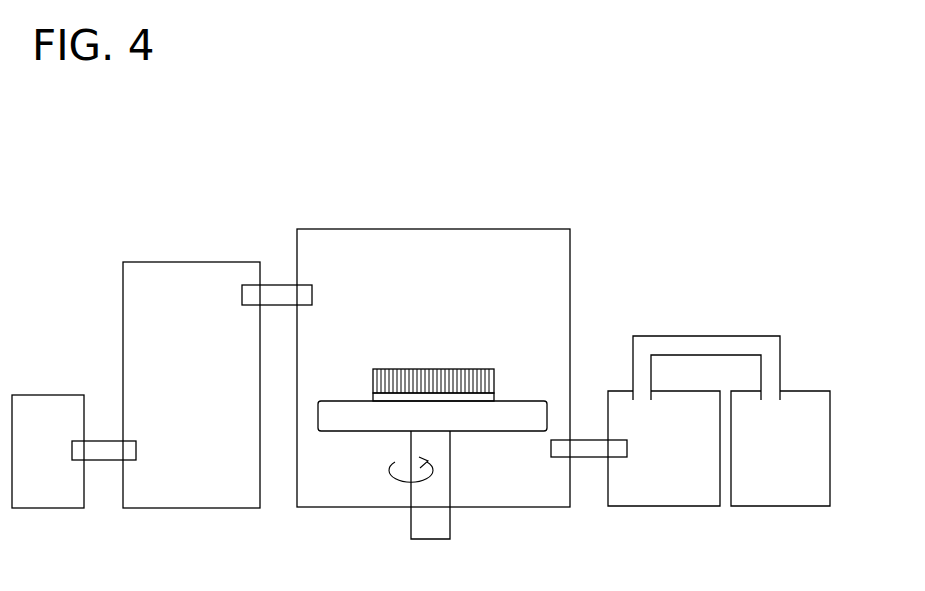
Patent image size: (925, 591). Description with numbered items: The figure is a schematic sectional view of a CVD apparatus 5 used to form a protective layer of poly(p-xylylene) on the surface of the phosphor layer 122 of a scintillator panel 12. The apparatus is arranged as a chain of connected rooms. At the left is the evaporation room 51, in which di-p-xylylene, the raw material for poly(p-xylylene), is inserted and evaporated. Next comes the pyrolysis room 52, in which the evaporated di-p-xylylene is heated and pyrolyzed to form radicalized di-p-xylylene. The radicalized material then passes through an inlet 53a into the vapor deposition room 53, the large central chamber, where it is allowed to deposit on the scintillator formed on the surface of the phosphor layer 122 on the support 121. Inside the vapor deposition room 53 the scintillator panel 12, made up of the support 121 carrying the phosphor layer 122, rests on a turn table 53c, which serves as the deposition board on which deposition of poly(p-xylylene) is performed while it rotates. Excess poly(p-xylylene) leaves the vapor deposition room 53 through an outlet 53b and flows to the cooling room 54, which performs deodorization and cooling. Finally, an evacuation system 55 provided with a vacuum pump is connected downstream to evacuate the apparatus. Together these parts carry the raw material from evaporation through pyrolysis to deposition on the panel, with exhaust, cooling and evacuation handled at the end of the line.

The CVD apparatus 5 is at (421, 141).
The scintillator panel 12 is at (450, 340).
The support 121 is at (500, 397).
The phosphor layer 122 is at (500, 380).
The evaporation room 51 is at (45, 405).
The pyrolysis room 52 is at (181, 270).
The vapor deposition room 53 is at (354, 242).
The inlet 53a is at (276, 285).
The outlet 53b is at (595, 460).
The turn table 53c is at (365, 436).
The cooling room 54 is at (661, 490).
The evacuation system 55 is at (781, 490).